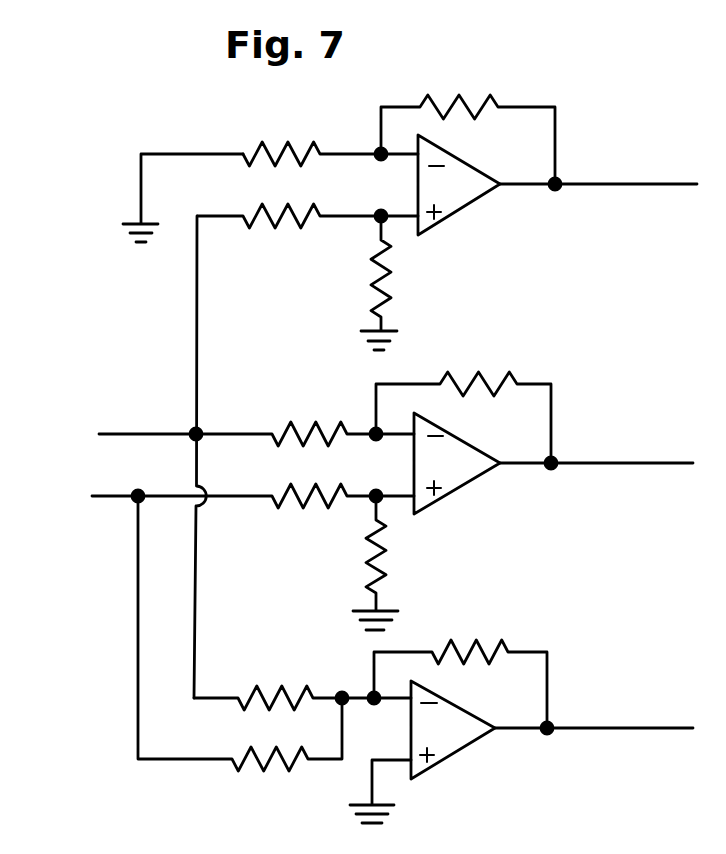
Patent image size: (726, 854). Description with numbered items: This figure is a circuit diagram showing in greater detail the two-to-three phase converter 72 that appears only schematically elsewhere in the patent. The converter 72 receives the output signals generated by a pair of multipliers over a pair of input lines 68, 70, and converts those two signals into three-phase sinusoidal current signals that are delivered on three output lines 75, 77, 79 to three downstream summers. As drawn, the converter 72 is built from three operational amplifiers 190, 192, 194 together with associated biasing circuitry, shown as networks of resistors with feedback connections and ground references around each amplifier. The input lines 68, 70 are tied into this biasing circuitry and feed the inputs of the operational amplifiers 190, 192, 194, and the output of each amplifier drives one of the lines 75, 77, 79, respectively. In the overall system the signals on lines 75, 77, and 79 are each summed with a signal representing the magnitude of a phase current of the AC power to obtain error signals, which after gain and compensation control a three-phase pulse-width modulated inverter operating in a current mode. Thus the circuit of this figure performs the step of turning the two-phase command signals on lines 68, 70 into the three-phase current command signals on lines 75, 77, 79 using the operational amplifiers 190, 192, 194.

The 2-to-3 phase converter 72 is at (95, 150).
The line 70 is at (113, 437).
The line 68 is at (108, 497).
The line 75 is at (633, 187).
The line 77 is at (631, 465).
The line 79 is at (625, 730).
The operational amplifier 190 is at (458, 212).
The operational amplifier 192 is at (457, 492).
The operational amplifier 194 is at (453, 753).